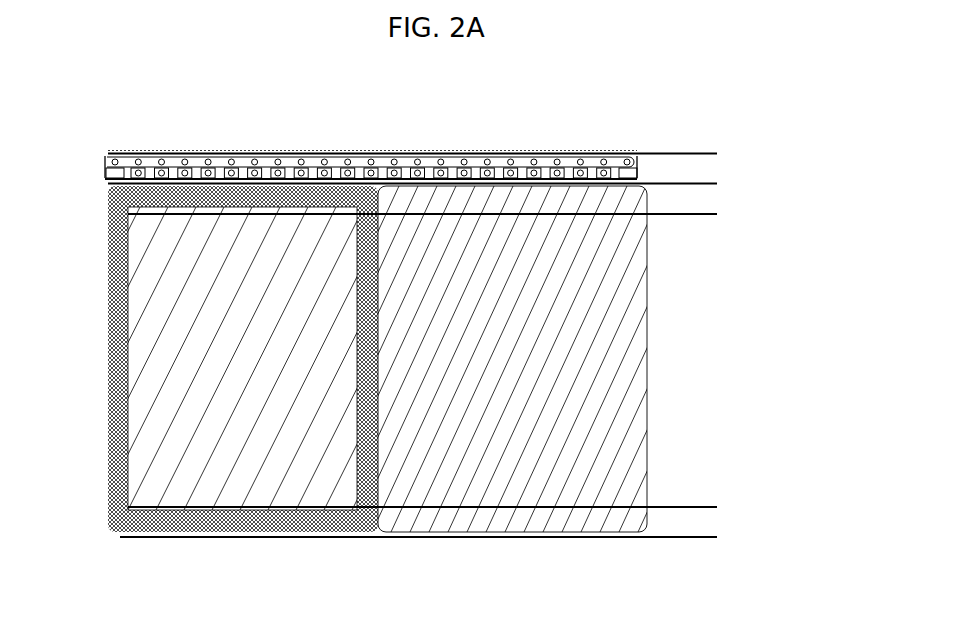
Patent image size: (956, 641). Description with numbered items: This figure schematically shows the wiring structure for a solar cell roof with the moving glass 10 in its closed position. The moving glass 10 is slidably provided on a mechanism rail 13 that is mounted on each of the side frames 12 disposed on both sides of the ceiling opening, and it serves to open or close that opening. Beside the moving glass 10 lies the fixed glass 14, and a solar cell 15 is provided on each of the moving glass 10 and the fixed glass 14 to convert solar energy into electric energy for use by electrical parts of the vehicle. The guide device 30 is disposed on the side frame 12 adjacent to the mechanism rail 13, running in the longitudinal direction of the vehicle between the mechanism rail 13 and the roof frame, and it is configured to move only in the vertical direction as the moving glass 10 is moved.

The moving glass 10 is at (265, 523).
The side frame 12 is at (710, 168).
The mechanism rail 13 is at (709, 198).
The fixed glass 14 is at (628, 360).
The solar cell 15 is at (163, 368).
The guide device 30 is at (353, 157).